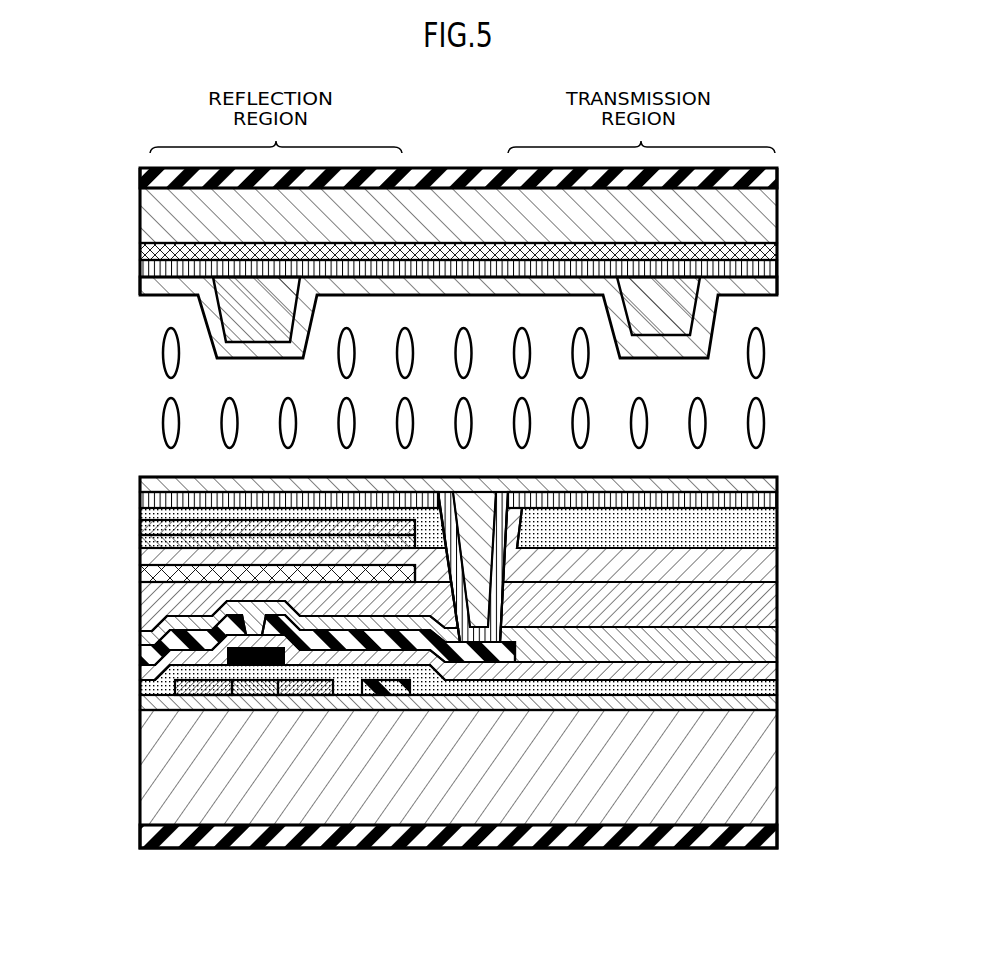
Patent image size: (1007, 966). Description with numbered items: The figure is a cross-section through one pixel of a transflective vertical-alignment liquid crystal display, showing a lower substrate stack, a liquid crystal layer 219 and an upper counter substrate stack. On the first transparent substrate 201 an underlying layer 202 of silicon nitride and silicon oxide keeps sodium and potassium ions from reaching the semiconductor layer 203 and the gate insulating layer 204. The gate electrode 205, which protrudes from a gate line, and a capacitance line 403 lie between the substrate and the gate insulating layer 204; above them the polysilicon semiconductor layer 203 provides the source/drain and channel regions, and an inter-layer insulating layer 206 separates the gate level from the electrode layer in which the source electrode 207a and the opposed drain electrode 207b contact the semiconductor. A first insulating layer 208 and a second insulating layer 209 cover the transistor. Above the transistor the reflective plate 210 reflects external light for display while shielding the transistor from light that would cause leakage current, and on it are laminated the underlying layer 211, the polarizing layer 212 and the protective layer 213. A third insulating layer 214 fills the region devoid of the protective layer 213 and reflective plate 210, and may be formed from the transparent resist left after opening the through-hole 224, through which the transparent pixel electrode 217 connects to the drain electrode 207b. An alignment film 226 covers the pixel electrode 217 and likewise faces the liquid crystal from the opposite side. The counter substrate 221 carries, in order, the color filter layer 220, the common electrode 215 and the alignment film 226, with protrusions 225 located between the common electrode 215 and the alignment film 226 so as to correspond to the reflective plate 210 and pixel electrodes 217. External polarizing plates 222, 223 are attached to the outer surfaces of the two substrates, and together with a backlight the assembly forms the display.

The first transparent substrate 201 is at (772, 768).
The underlying layer 202 is at (772, 697).
The semiconductor layer 203 is at (252, 658).
The gate insulating layer 204 is at (150, 688).
The gate electrode 205 is at (255, 670).
The inter-layer insulating layer 206 is at (140, 672).
The source electrode 207a is at (152, 650).
The drain electrode 207b is at (420, 655).
The first insulating layer 208 is at (772, 635).
The second insulating layer 209 is at (772, 598).
The reflective plate 210 is at (140, 575).
The underlying layer 211 is at (140, 545).
The polarizing layer 212 is at (140, 527).
The protective layer 213 is at (140, 500).
The third insulating layer 214 is at (772, 531).
The common electrode 215 is at (767, 274).
The pixel electrode 217 is at (773, 495).
The liquid crystal layer 219 is at (163, 352).
The color filter layer 220 is at (767, 250).
The second substrate 221 is at (767, 213).
The external polarizing plate 222 is at (772, 832).
The external polarizing plate 223 is at (775, 175).
The through-hole 224 is at (510, 590).
The protrusion 225 is at (238, 312).
The alignment film 226 is at (770, 296).
The capacitance line 403 is at (385, 692).